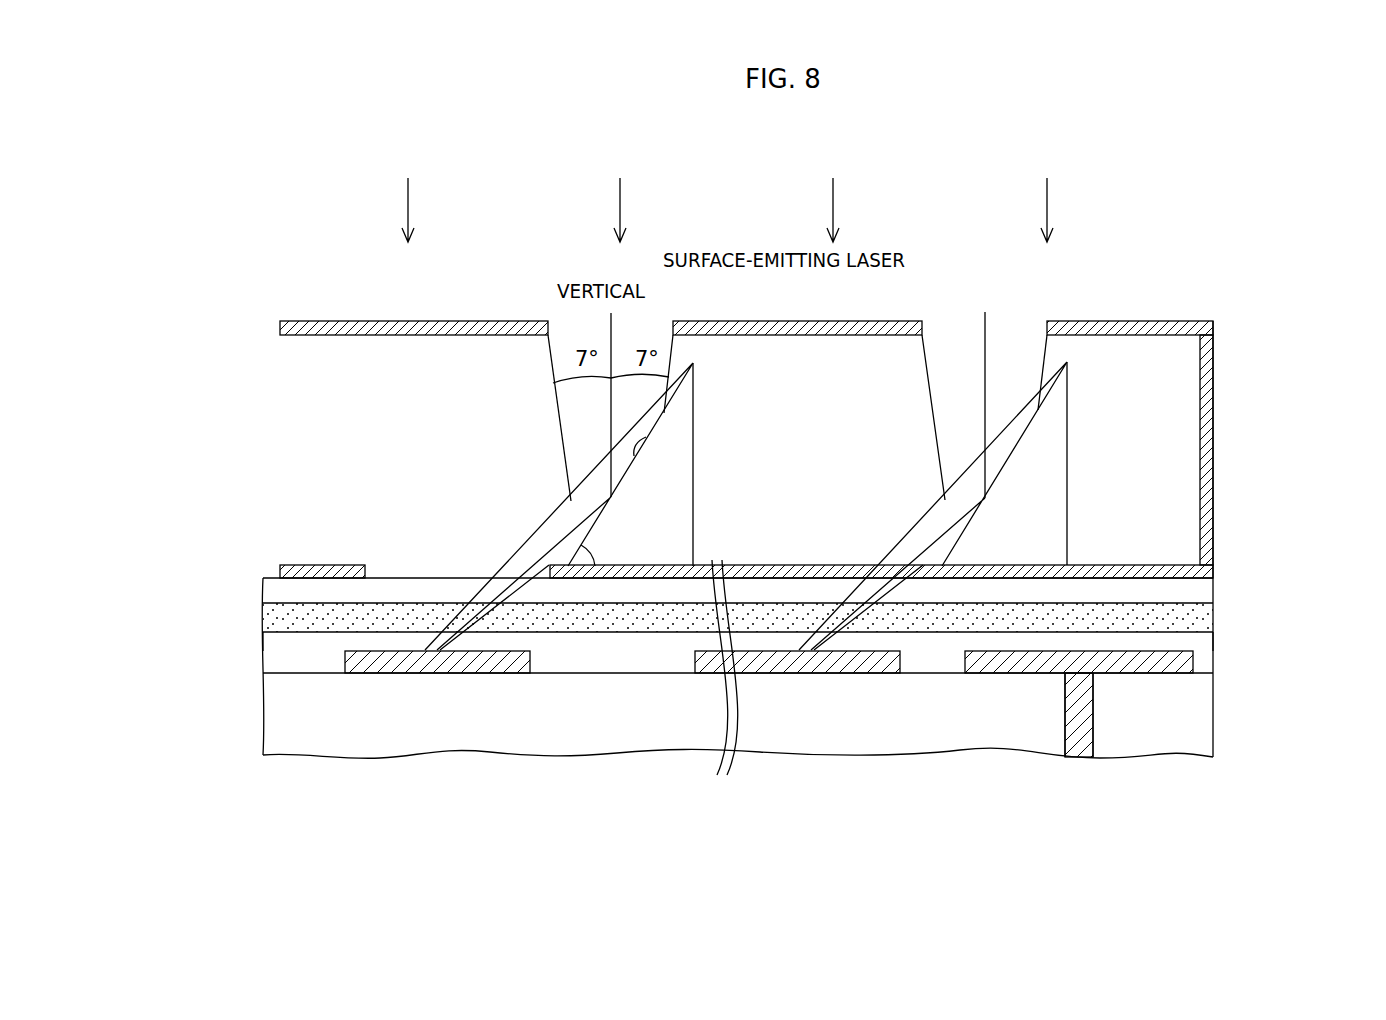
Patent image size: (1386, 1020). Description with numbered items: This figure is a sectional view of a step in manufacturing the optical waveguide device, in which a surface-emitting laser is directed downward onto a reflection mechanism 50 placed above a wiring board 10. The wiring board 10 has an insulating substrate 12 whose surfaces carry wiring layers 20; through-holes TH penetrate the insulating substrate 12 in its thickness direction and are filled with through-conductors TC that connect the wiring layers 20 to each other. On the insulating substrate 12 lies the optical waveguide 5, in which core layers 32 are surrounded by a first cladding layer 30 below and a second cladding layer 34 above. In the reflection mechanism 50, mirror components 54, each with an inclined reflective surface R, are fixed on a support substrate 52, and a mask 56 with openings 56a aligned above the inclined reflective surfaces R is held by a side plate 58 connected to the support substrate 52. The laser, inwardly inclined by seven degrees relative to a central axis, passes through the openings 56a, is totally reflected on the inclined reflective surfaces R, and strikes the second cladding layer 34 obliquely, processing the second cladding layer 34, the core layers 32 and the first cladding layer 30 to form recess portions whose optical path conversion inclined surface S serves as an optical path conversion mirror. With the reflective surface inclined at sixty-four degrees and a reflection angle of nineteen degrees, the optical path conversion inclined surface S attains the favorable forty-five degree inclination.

The reflection mechanism 50 is at (817, 426).
The mask 56 is at (1170, 328).
The opening 56a is at (1046, 334).
The side plate 58 is at (1202, 422).
The mirror component 54 is at (1048, 487).
The support substrate 52 is at (1143, 570).
The optical waveguide 5 is at (802, 607).
The second cladding layer 34 is at (1203, 596).
The core layer 32 is at (1213, 620).
The first cladding layer 30 is at (775, 631).
The wiring board 10 is at (808, 568).
The wiring layer 20 is at (1183, 666).
The insulating substrate 12 is at (1203, 720).
The through-hole TH is at (1093, 707).
The through-conductor TC is at (1076, 718).
The optical path conversion inclined surface S is at (432, 626).
The inclined reflective surface R is at (1050, 388).